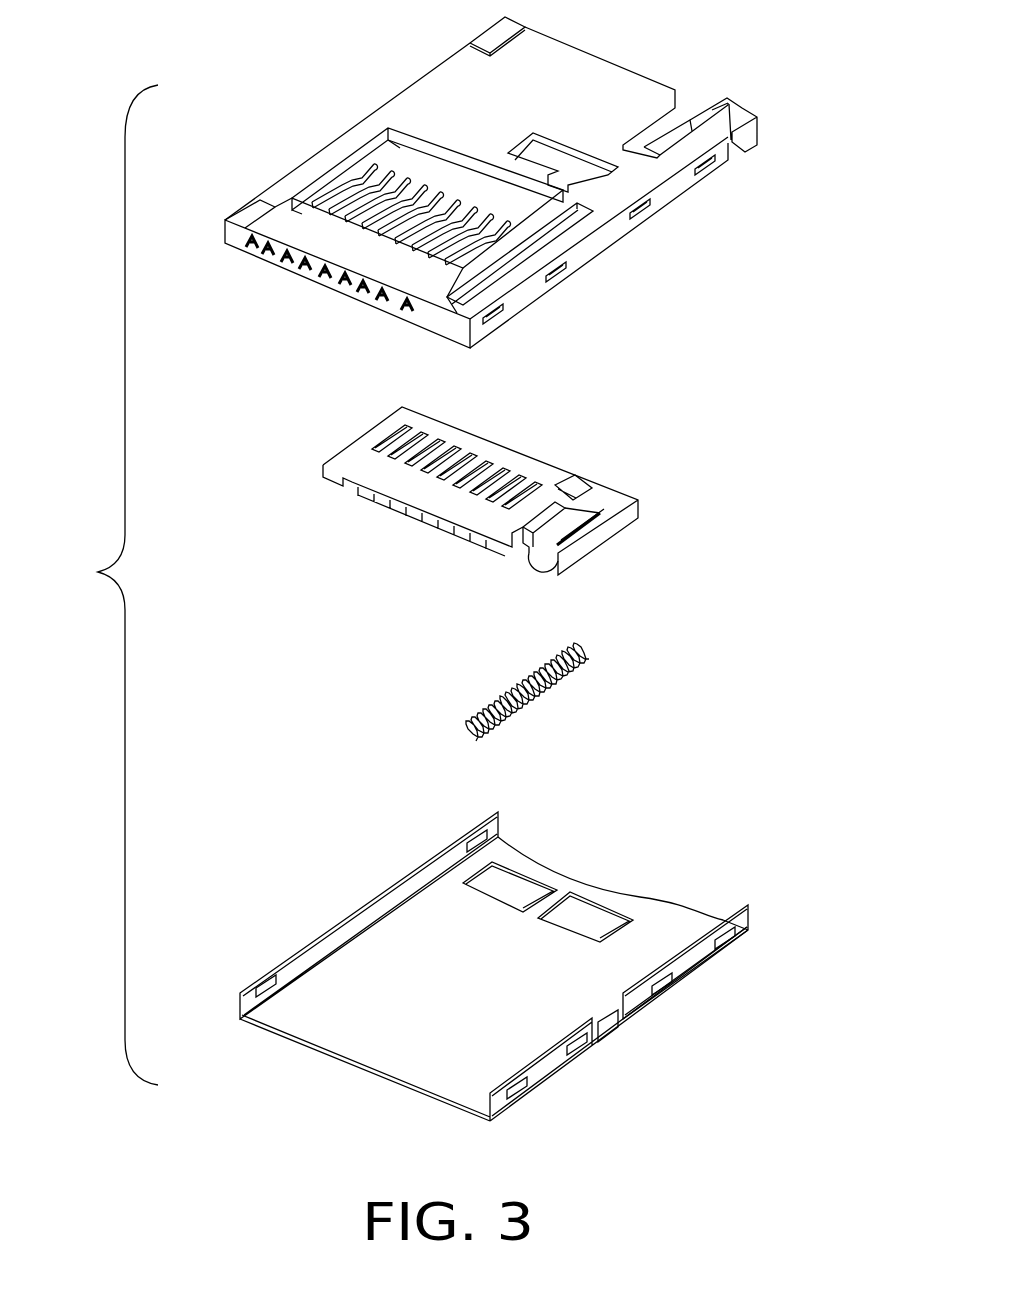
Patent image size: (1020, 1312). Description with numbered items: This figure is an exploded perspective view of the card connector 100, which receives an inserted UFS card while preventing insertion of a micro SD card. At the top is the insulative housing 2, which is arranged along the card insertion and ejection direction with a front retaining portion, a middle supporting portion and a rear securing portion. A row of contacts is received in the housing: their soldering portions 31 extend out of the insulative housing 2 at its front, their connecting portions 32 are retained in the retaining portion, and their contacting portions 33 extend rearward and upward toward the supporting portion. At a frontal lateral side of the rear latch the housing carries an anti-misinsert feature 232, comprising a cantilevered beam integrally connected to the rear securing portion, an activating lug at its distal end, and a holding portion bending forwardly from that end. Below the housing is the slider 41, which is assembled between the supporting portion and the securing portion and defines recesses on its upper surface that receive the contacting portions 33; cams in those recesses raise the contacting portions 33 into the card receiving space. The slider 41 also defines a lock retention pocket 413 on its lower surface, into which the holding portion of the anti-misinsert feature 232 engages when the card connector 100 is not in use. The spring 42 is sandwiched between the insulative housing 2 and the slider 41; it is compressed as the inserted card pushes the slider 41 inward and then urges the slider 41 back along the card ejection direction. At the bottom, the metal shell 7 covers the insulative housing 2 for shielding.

The card connector 100 is at (98, 572).
The insulative housing 2 is at (462, 87).
The anti-misinsert feature 232 is at (573, 173).
The soldering portions 31 is at (245, 246).
The connecting portions 32 is at (313, 197).
The contacting portions 33 is at (363, 177).
The slider 41 is at (342, 424).
The lock retention pocket 413 is at (563, 490).
The spring 42 is at (492, 678).
The metal shell 7 is at (340, 885).